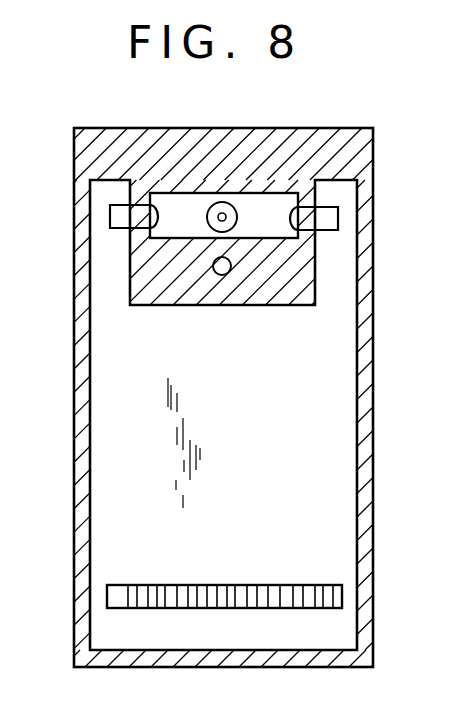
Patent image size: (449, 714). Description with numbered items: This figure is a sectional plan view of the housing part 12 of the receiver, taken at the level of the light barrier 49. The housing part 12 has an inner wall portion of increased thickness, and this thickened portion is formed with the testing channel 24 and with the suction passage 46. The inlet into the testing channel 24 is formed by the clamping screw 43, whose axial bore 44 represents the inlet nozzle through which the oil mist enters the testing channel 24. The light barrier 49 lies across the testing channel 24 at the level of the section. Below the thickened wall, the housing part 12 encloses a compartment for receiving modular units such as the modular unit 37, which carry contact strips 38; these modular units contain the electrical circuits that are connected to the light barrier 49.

The housing part 12 is at (73, 443).
The testing channel 24 is at (176, 205).
The modular unit 37 is at (333, 362).
The contact strips 38 is at (278, 592).
The clamping screw 43 is at (222, 199).
The axial bore 44 is at (222, 217).
The suction passage 46 is at (222, 275).
The light barrier 49 is at (123, 216).